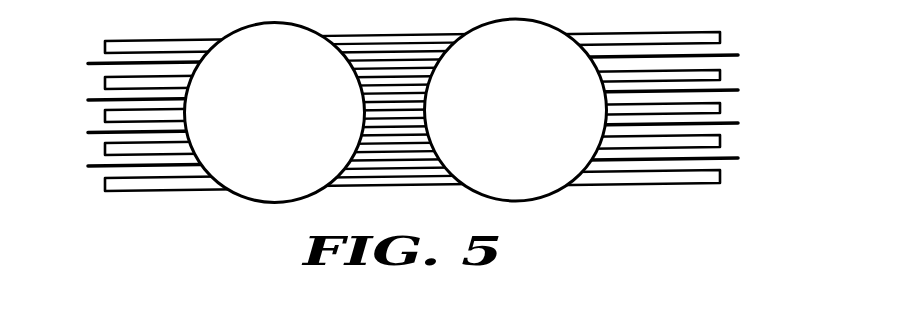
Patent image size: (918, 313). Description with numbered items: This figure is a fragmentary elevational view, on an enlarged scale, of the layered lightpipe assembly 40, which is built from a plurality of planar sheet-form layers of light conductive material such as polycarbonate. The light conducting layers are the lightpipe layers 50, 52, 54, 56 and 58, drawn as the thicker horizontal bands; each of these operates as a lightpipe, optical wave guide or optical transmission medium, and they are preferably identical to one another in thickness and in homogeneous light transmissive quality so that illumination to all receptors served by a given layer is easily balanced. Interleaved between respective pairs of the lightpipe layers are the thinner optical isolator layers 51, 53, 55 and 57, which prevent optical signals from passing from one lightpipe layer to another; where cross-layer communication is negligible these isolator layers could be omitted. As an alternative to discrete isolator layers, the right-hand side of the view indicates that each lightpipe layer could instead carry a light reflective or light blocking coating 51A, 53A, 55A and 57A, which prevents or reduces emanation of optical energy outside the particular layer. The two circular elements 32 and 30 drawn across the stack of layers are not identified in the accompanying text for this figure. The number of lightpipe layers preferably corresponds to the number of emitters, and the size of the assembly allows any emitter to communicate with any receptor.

The layered lightpipe assembly 40 is at (152, 37).
The lightpipe layer 50 is at (105, 44).
The optical isolator layer 51 is at (88, 63).
The lightpipe layer 52 is at (105, 84).
The optical isolator layer 53 is at (88, 100).
The lightpipe layer 54 is at (105, 117).
The optical isolator layer 55 is at (88, 132).
The lightpipe layer 56 is at (105, 150).
The optical isolator layer 57 is at (88, 166).
The lightpipe layer 58 is at (105, 185).
The light reflective or light blocking coating 51A is at (720, 79).
The light reflective or light blocking coating 53A is at (720, 112).
The light reflective or light blocking coating 55A is at (720, 146).
The light reflective or light blocking coating 57A is at (720, 182).
The first lens 32 is at (273, 202).
The second lens 30 is at (513, 199).